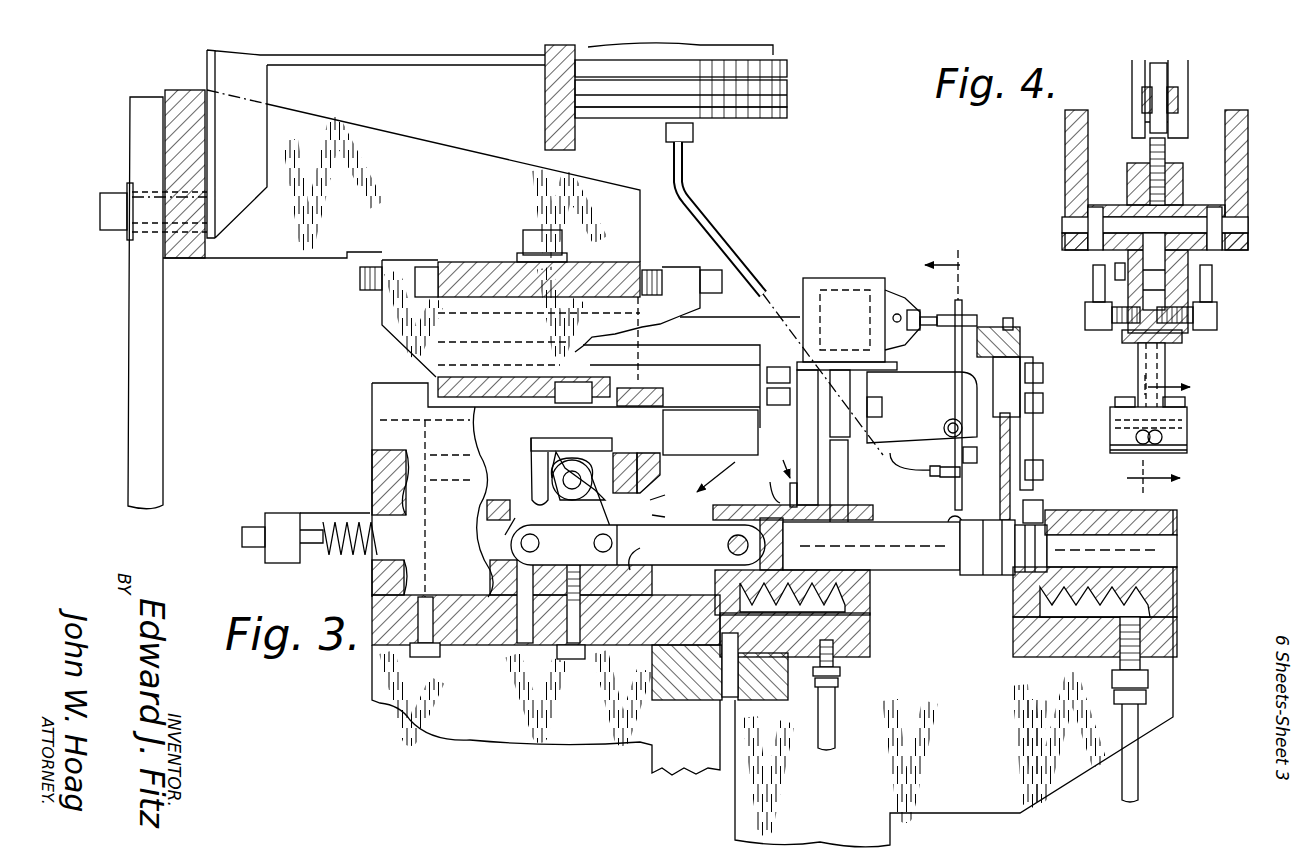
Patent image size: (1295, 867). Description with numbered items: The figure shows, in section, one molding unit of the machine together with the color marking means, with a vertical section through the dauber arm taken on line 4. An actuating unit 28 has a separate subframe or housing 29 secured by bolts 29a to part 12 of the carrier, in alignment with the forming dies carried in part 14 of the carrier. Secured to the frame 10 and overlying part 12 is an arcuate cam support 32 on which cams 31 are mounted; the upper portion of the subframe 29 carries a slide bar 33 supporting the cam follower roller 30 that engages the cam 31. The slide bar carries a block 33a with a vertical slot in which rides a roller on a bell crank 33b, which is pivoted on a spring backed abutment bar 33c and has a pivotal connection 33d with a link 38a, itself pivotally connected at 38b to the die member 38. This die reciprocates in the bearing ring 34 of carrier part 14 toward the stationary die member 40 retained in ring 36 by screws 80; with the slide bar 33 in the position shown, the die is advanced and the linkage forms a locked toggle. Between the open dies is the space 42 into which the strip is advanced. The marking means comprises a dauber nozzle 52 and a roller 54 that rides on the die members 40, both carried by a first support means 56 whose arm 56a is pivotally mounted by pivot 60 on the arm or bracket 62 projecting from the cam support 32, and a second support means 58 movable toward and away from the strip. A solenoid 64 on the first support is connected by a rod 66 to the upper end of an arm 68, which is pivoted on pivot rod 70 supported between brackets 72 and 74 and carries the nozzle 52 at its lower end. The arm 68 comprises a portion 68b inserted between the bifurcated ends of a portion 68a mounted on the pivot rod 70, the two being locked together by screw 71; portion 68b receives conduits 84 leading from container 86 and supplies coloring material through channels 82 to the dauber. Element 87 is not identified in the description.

In FIG. 3, the arm 87 is at (430, 62).
In FIG. 3, the container 86 is at (777, 88).
In FIG. 3, the flexible conduit 84 is at (720, 233).
In FIG. 4, the flexible conduit 84 is at (1093, 284).
In FIG. 3, the arcuate cam support 32 is at (598, 275).
In FIG. 3, the cam 31 is at (610, 384).
In FIG. 3, the cam follower roller 30 is at (560, 400).
In FIG. 3, the actuating unit 28 is at (355, 400).
In FIG. 3, the subframe or housing 29 is at (478, 628).
In FIG. 3, the bolt 29a is at (417, 658).
In FIG. 3, the slide bar 33 is at (703, 415).
In FIG. 3, the block 33a is at (662, 447).
In FIG. 3, the bell crank 33b is at (680, 516).
In FIG. 3, the spring backed abutment bar 33c is at (527, 515).
In FIG. 3, the pivotal connection 33d is at (647, 571).
In FIG. 3, the arm or bracket 62 is at (803, 410).
In FIG. 3, the carrier part 12 is at (716, 476).
In FIG. 3, the solenoid 64 is at (833, 290).
In FIG. 3, the rod 66 is at (930, 318).
In FIG. 3, the arm 68 is at (963, 308).
In FIG. 4, the arm 68 is at (1165, 76).
In FIG. 3, the section line 4- 4 is at (936, 402).
In FIG. 3, the arm or bracket 72 is at (920, 375).
In FIG. 4, the arm or bracket 72 is at (1068, 152).
In FIG. 3, the pivot rod 70 is at (946, 427).
In FIG. 4, the pivot rod 70 is at (1185, 222).
In FIG. 3, the first support means 56 is at (778, 458).
In FIG. 3, the pivot 60 is at (763, 481).
In FIG. 3, the arm 56a is at (842, 468).
In FIG. 3, the second support means 58 is at (940, 480).
In FIG. 4, the second support means 58 is at (1175, 346).
In FIG. 3, the dauber nozzle 52 is at (972, 520).
In FIG. 4, the dauber nozzle 52 is at (1165, 440).
In FIG. 3, the roller 54 is at (1015, 455).
In FIG. 3, the screw 80 is at (1045, 494).
In FIG. 3, the ring member 34 is at (755, 513).
In FIG. 3, the forming die member 38 is at (900, 565).
In FIG. 3, the forming die member 40 is at (1008, 578).
In FIG. 3, the ring member 36 is at (1090, 513).
In FIG. 3, the carrier part 14 is at (1190, 537).
In FIG. 3, the link 38a is at (686, 558).
In FIG. 3, the pivotal connection 38b is at (735, 552).
In FIG. 3, the space 42 is at (947, 595).
In FIG. 4, the arm or bracket 74 is at (1247, 127).
In FIG. 4, the screw 71 is at (1148, 187).
In FIG. 4, the arm portion 68a is at (1170, 165).
In FIG. 4, the channel 82 is at (1140, 352).
In FIG. 4, the arm portion 68b is at (1140, 382).
In FIG. 4, the frame 10 is at (1175, 435).